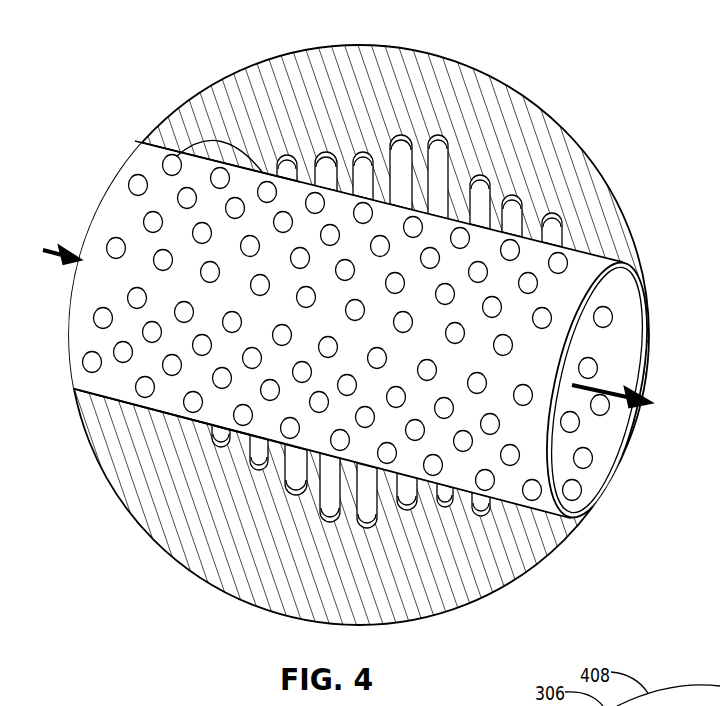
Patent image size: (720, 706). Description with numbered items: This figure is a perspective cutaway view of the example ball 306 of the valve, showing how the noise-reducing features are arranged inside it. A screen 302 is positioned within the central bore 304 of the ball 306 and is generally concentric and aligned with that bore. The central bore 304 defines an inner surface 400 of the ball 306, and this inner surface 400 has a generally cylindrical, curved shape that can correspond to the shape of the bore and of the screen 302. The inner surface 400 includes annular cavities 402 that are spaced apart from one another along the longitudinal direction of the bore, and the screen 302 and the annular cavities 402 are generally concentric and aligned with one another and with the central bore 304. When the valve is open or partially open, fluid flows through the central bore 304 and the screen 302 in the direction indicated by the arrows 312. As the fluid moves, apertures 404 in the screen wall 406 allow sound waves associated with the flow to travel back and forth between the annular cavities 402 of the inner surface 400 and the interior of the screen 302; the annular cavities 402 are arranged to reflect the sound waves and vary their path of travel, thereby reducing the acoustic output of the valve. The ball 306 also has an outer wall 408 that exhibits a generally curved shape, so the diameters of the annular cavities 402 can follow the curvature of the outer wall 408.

The screen 302 is at (157, 139).
The central bore 304 is at (172, 147).
The ball 306 is at (268, 58).
The arrows 312 is at (66, 248).
The inner surface 400 is at (105, 398).
The annular cavities 402 is at (257, 470).
The apertures 404 is at (219, 167).
The screen wall 406 is at (483, 231).
The outer wall 408 is at (478, 70).